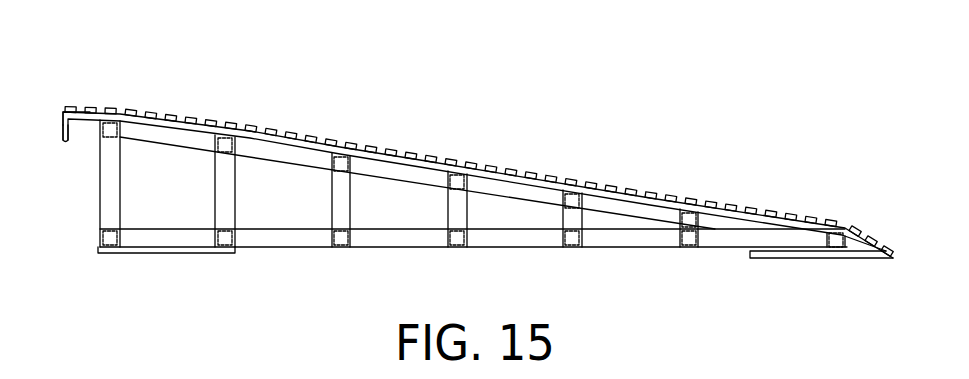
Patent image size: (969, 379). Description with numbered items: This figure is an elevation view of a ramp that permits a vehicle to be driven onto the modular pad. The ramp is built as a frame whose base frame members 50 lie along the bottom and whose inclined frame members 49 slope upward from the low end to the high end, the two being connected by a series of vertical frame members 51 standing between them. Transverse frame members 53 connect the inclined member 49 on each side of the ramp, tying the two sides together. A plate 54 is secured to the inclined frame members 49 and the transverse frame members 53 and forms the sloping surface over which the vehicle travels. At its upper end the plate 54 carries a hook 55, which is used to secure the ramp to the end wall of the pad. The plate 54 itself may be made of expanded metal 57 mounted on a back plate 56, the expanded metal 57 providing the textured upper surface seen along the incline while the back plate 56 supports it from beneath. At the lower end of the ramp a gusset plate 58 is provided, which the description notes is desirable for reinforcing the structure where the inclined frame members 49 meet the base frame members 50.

The inclined frame members 49 is at (278, 152).
The base frame members 50 is at (167, 238).
The vertical frame members 51 is at (340, 200).
The transverse frame members 53 is at (221, 133).
The plate 54 is at (80, 108).
The hook 55 is at (63, 136).
The back plate 56 is at (141, 118).
The expanded metal 57 is at (172, 112).
The gusset plate 58 is at (798, 242).